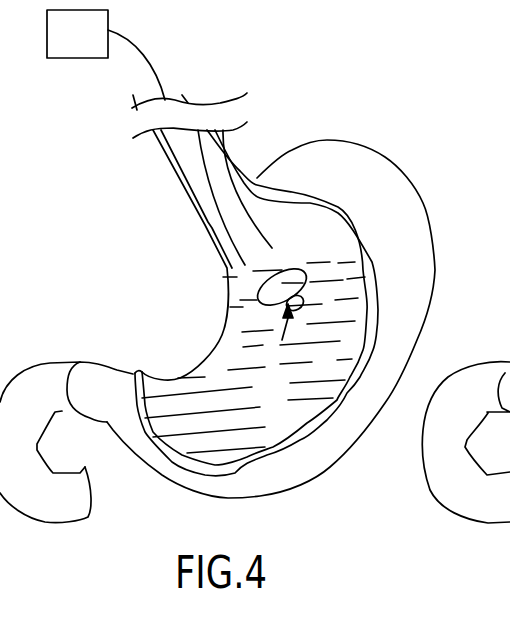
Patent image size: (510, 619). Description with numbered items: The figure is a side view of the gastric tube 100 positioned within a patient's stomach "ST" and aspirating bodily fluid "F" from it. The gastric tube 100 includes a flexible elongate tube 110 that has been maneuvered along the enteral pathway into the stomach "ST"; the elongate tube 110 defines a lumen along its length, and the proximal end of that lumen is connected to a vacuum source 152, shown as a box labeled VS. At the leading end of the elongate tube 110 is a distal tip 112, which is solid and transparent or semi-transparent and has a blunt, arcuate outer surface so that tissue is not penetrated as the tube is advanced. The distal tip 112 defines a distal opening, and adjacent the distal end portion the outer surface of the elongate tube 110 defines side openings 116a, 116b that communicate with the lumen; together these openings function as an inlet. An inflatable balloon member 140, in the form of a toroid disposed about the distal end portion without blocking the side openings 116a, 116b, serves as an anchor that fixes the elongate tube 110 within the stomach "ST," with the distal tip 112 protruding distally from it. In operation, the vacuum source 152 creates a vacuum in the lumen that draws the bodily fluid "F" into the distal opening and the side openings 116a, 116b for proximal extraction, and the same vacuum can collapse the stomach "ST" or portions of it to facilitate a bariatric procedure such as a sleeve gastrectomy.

The gastric tube 100 is at (308, 223).
The elongate tube 110 is at (187, 153).
The distal tip 112 is at (218, 335).
The side opening 116a is at (236, 266).
The side opening 116b is at (278, 244).
The inflatable balloon member 140 is at (222, 270).
The vacuum source 152 is at (72, 58).
The stomach ST is at (370, 292).
The bodily fluid F is at (345, 323).